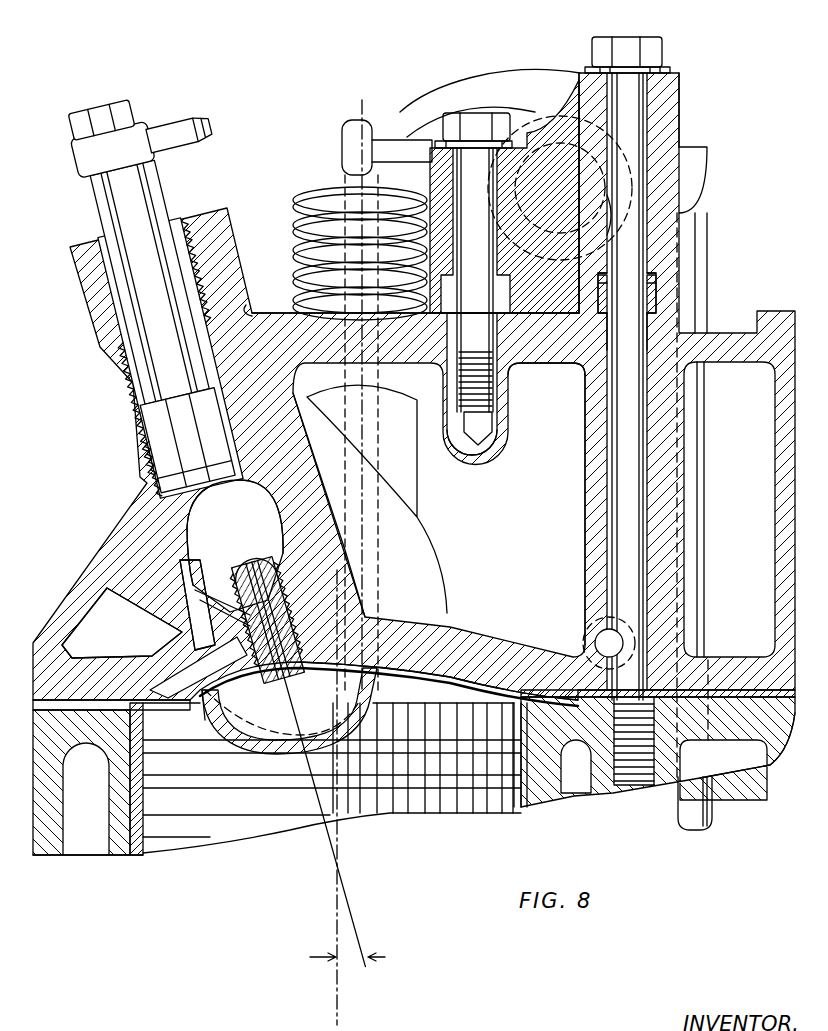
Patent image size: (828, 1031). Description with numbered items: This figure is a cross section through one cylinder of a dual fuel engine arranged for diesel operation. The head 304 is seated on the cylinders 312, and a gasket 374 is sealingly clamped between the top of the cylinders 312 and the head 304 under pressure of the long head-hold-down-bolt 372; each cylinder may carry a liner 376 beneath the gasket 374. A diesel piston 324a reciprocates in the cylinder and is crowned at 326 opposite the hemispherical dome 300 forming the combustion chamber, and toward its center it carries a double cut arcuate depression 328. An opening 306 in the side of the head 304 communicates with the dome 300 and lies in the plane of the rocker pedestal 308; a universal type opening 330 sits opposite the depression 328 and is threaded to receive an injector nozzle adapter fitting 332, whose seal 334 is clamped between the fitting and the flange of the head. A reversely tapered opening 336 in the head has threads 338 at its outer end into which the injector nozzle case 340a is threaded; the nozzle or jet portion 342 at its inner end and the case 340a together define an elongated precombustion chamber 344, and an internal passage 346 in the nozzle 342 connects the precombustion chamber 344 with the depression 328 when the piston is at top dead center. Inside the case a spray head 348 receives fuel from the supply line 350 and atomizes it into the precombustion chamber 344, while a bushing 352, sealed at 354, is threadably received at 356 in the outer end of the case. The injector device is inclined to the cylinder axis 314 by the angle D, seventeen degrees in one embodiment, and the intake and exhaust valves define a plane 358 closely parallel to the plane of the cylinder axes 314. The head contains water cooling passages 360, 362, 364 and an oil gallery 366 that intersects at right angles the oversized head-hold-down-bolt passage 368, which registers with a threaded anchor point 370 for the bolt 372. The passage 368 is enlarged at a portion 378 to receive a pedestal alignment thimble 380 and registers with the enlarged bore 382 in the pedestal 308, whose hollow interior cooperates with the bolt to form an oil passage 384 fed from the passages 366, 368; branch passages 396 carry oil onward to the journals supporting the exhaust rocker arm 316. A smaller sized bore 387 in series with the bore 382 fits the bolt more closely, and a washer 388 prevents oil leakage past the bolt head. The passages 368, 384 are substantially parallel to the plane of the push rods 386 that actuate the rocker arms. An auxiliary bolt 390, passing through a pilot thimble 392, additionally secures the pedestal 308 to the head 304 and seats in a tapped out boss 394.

The hemispherical dome 300 is at (500, 700).
The head 304 is at (43, 628).
The opening 306 is at (237, 345).
The rocker pedestal 308 is at (672, 87).
The cylinders 312 is at (123, 852).
The cylinder axis plane 314 is at (339, 1000).
The exhaust rocker arm 316 is at (414, 102).
The diesel piston 324a is at (477, 697).
The piston crown 326 is at (464, 697).
The double cut arcuate depression 328 is at (278, 705).
The universal type opening 330 is at (206, 703).
The injector nozzle adapter fitting 332 is at (350, 259).
The seal 334 is at (195, 626).
The reversely tapered opening 336 is at (200, 552).
The threads 338 is at (157, 500).
The injector nozzle case 340a is at (137, 415).
The nozzle or jet portion 342 is at (240, 590).
The precombustion chamber 344 is at (250, 500).
The internal passage 346 is at (305, 568).
The spray head 348 is at (215, 420).
The supply line 350 is at (178, 124).
The bushing 352 is at (90, 238).
The seal 354 is at (113, 347).
The threads 356 is at (202, 234).
The valve plane 358 is at (363, 115).
The water cooling passage 360 is at (100, 603).
The water cooling passage 362 is at (573, 415).
The water cooling passage 364 is at (762, 385).
The oil supply passage 366 is at (603, 630).
The head-hold-down-bolt passage 368 is at (597, 531).
The threaded anchor point 370 is at (614, 716).
The head-hold-down-bolt 372 is at (654, 124).
The gasket 374 is at (781, 750).
The liner 376 is at (138, 852).
The enlarged portion 378 is at (611, 340).
The pedestal alignment thimble 380 is at (661, 293).
The bore 382 is at (654, 230).
The passage 384 is at (657, 270).
The push rods 386 is at (712, 797).
The smaller sized bore 387 is at (612, 105).
The washer 388 is at (592, 60).
The auxiliary bolt 390 is at (472, 150).
The pilot thimble 392 is at (443, 318).
The tapped out boss 394 is at (497, 440).
The branch passages 396 is at (611, 203).
The injector angle D is at (347, 797).